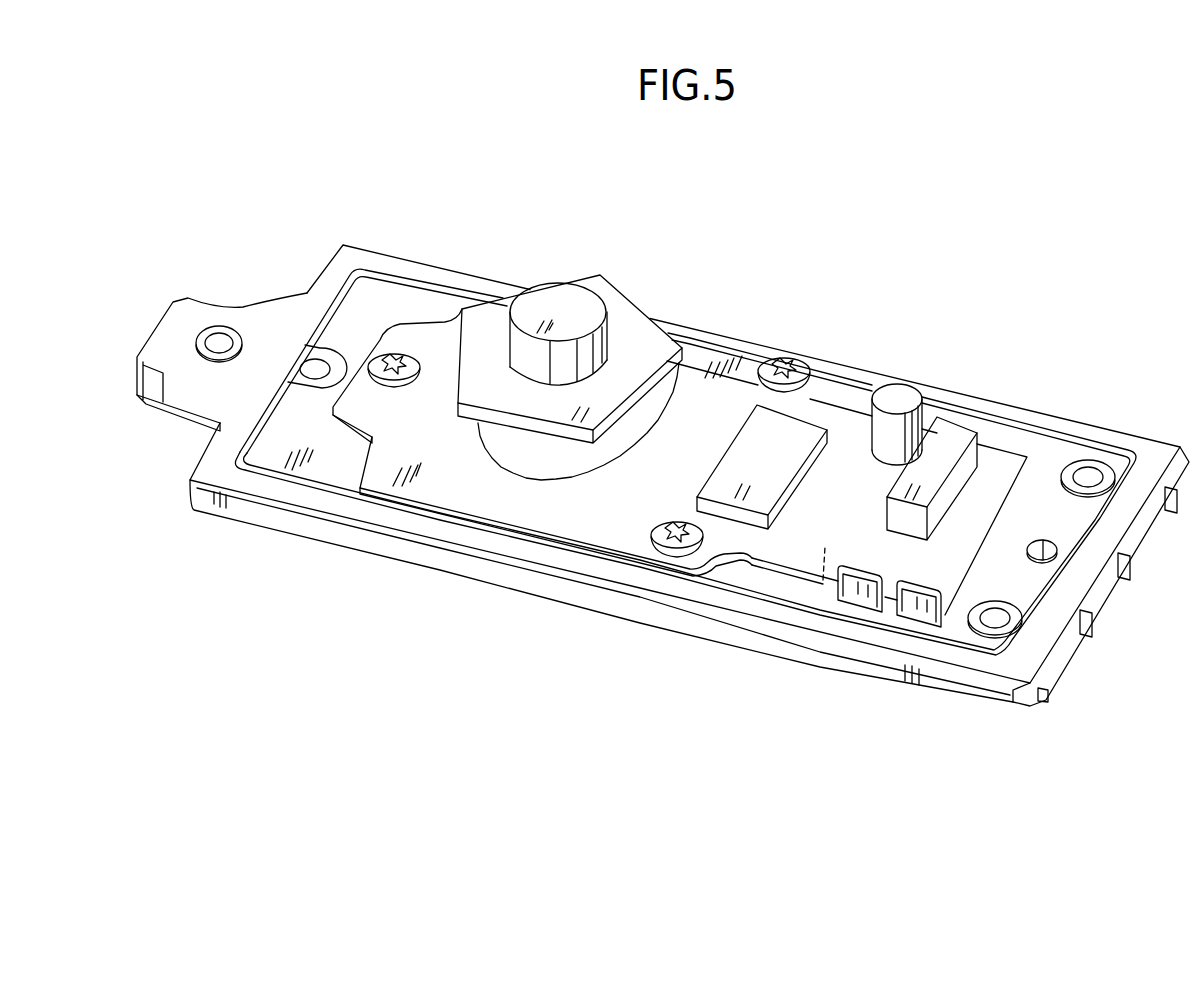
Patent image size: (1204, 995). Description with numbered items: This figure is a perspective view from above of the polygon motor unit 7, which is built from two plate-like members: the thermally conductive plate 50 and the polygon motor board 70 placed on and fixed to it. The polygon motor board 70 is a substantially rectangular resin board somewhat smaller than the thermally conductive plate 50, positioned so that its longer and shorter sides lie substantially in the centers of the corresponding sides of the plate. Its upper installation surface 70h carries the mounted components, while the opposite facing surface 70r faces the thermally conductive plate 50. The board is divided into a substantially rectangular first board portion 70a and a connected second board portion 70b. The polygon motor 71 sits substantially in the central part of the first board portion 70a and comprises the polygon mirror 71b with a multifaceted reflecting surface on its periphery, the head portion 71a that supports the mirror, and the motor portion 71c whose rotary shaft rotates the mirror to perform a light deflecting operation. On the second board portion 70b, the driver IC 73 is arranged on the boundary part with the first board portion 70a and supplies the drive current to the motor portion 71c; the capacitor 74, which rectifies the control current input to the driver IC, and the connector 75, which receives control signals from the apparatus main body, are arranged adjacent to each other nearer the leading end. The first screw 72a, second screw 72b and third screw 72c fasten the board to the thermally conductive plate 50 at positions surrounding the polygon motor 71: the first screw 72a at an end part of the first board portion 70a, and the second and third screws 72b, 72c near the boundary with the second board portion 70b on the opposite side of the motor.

The polygon motor unit 7 is at (713, 318).
The thermally conductive plate 50 is at (352, 537).
The polygon motor board 70 is at (693, 738).
The first board portion 70a is at (533, 503).
The second board portion 70b is at (808, 527).
The installation surface 70h is at (460, 493).
The facing surface 70r is at (823, 580).
The polygon motor 71 is at (707, 212).
The head portion 71a is at (540, 307).
The polygon mirror 71b is at (623, 320).
The motor portion 71c is at (680, 357).
The first screw 72a is at (392, 352).
The second screw 72b is at (783, 360).
The third screw 72c is at (677, 557).
The driver IC 73 is at (798, 437).
The capacitor 74 is at (897, 390).
The connector 75 is at (957, 437).